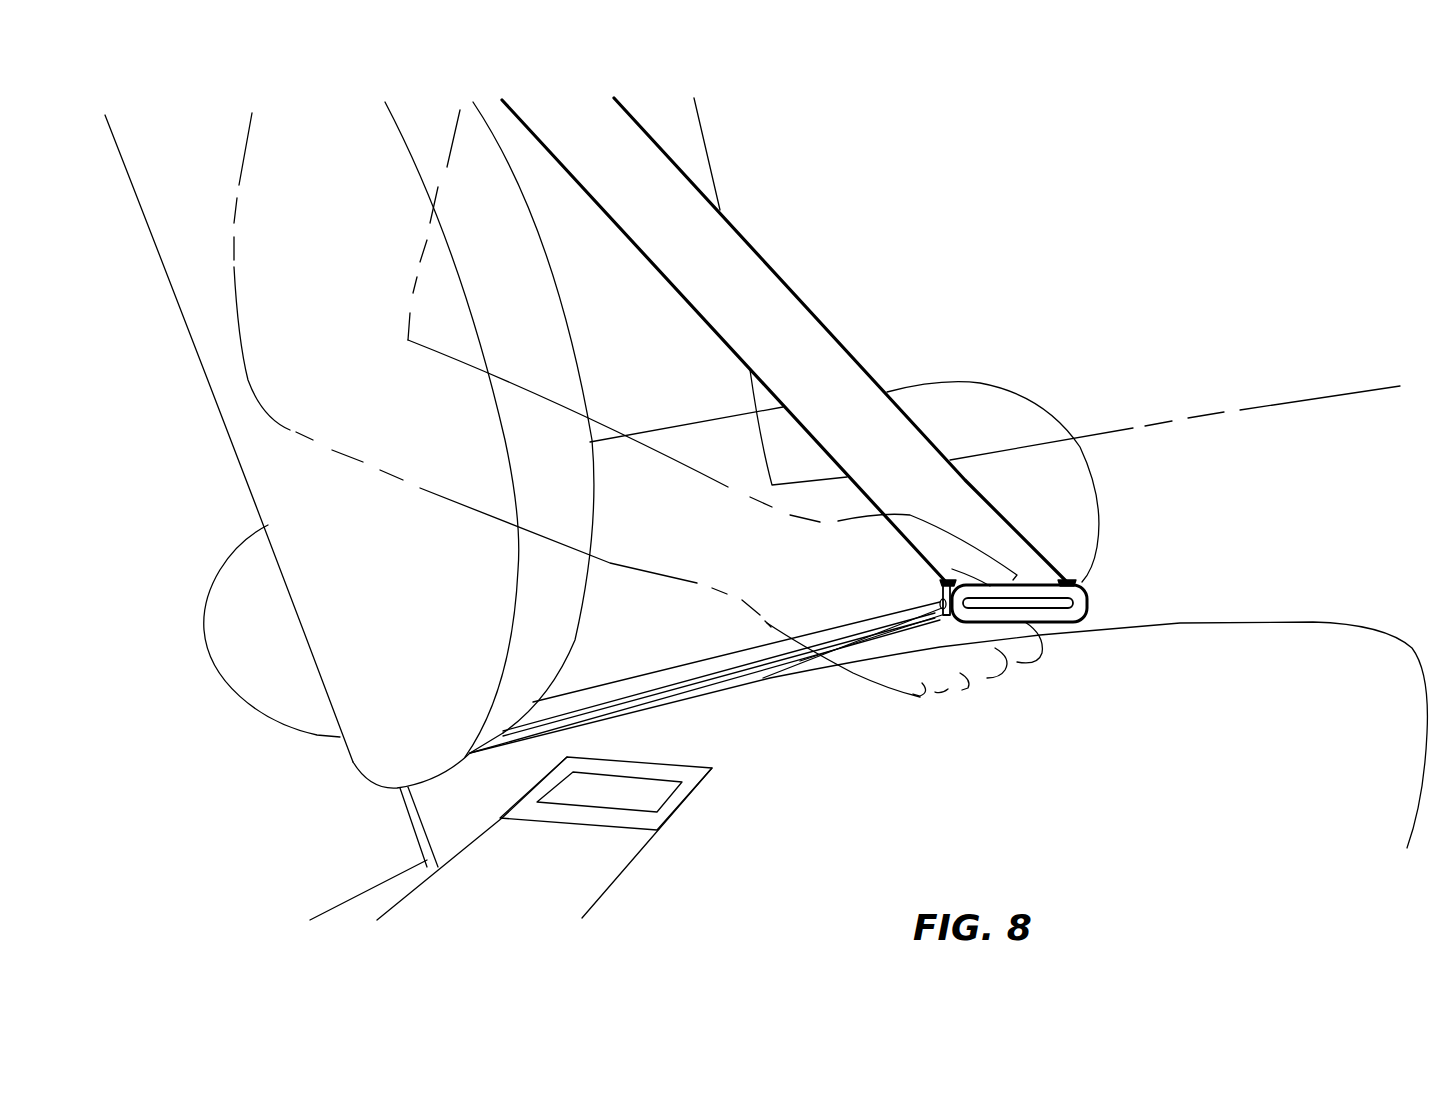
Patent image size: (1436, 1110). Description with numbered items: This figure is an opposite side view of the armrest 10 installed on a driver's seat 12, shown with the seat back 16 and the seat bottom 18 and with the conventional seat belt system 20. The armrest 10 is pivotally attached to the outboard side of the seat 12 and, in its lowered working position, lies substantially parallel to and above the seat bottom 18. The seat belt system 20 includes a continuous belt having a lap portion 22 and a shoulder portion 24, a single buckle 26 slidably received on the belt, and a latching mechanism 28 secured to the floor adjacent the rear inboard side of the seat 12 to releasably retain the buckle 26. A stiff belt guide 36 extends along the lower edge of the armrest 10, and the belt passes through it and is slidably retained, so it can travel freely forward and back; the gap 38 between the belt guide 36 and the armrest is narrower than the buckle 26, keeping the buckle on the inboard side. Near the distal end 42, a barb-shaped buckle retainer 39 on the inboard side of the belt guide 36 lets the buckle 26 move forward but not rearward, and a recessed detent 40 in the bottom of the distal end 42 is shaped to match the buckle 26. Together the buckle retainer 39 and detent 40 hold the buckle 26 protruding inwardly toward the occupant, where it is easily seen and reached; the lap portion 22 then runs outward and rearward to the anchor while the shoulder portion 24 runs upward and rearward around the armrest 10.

The armrest 10 is at (274, 644).
The driver's seat 12 is at (362, 762).
The seat back 16 is at (394, 581).
The seat bottom 18 is at (942, 816).
The seat belt system 20 is at (1146, 353).
The lap portion 22 is at (818, 663).
The shoulder portion 24 is at (702, 305).
The buckle 26 is at (1090, 596).
The latching mechanism 28 is at (675, 802).
The belt guide 36 is at (708, 680).
The gap 38 is at (642, 698).
The buckle retainer 39 is at (942, 602).
The recessed detent 40 is at (943, 588).
The distal end 42 is at (1060, 499).